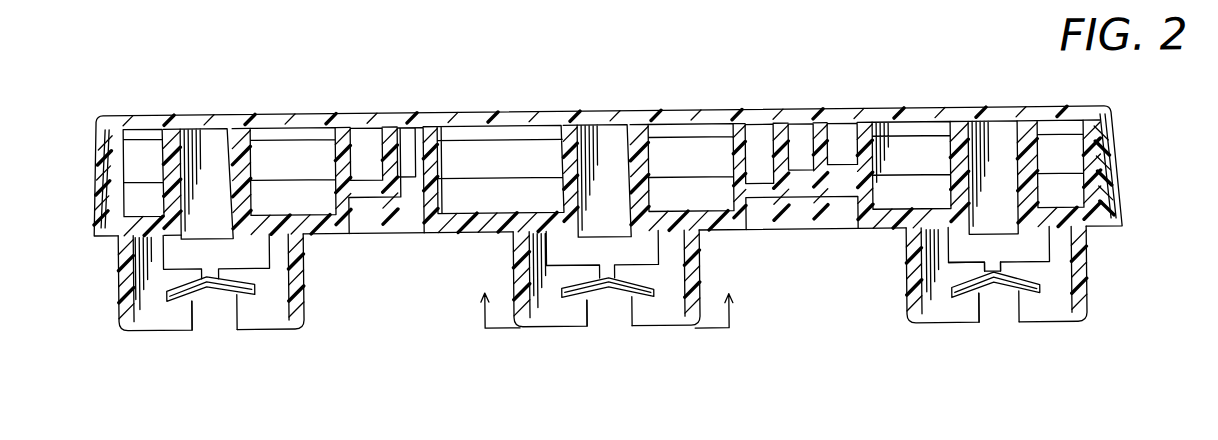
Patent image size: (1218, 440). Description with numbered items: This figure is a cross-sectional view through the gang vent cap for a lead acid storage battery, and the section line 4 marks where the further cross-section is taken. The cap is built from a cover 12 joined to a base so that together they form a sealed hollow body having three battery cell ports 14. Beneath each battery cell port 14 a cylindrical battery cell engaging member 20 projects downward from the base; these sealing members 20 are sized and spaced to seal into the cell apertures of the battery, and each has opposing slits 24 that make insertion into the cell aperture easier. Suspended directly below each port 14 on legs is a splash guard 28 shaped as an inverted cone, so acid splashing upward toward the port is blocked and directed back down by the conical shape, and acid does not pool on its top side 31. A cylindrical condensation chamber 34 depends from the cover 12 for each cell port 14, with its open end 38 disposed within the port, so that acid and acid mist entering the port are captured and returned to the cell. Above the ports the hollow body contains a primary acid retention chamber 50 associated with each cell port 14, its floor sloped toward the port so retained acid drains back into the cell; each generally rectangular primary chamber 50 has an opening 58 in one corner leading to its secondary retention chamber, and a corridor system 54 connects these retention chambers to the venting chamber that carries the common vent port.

The cover 12 is at (272, 120).
The battery cell port 14 is at (170, 251).
The battery cell engaging member 20 is at (306, 296).
The slit 24 is at (217, 319).
The splash guard 28 is at (955, 294).
The top side of splash guard 31 is at (560, 292).
The condensation chamber 34 is at (563, 154).
The open end 38 is at (622, 224).
The primary acid retention chamber 50 is at (923, 150).
The corridor system 54 is at (370, 158).
The opening 58 is at (143, 136).
The section line 4- 4 is at (603, 332).